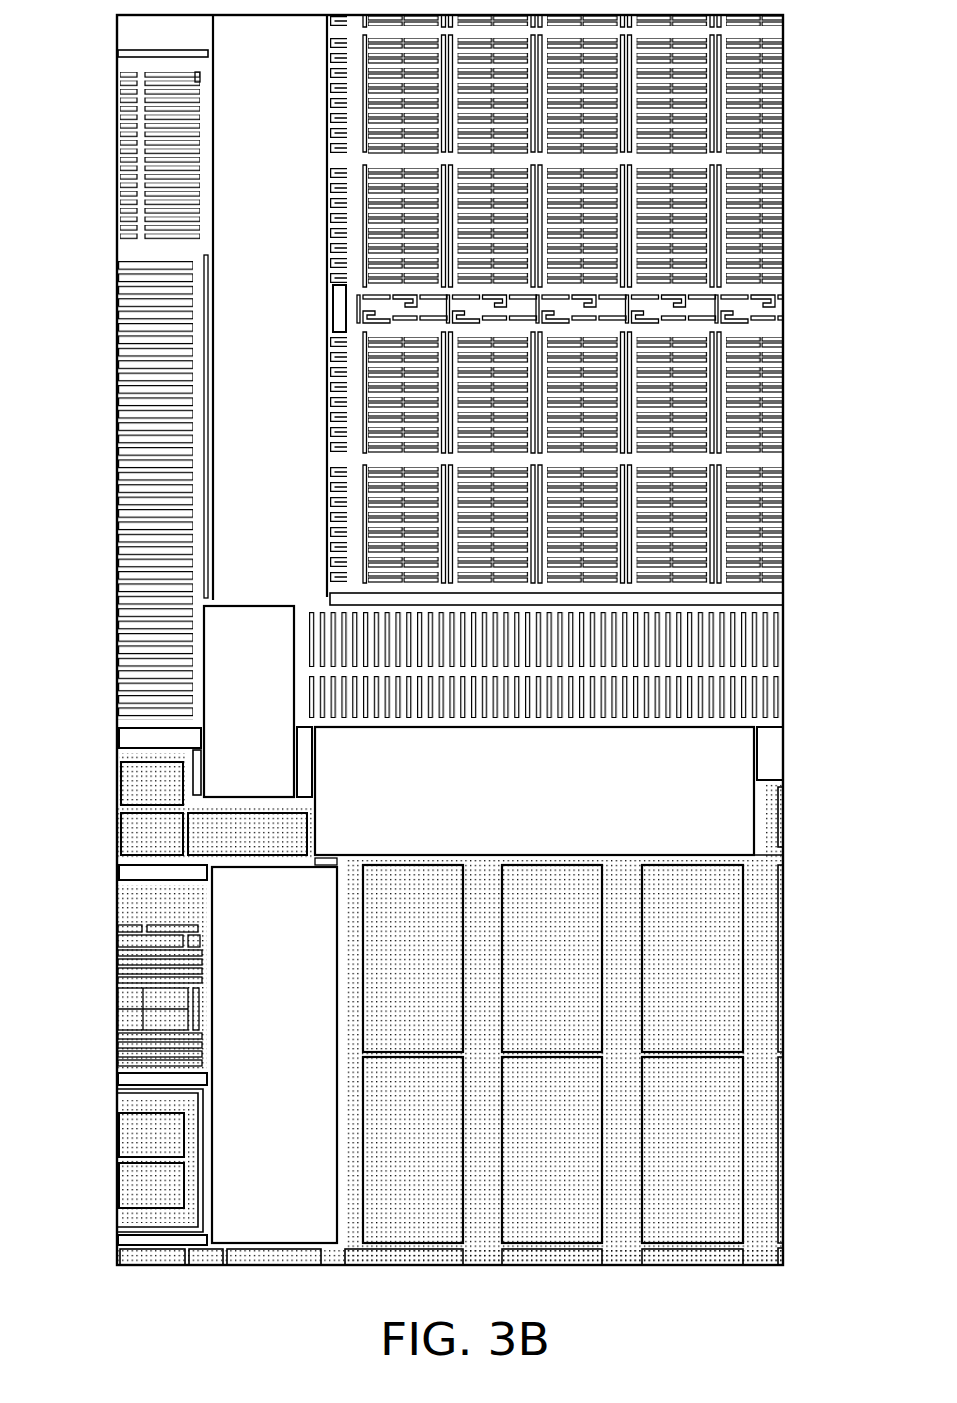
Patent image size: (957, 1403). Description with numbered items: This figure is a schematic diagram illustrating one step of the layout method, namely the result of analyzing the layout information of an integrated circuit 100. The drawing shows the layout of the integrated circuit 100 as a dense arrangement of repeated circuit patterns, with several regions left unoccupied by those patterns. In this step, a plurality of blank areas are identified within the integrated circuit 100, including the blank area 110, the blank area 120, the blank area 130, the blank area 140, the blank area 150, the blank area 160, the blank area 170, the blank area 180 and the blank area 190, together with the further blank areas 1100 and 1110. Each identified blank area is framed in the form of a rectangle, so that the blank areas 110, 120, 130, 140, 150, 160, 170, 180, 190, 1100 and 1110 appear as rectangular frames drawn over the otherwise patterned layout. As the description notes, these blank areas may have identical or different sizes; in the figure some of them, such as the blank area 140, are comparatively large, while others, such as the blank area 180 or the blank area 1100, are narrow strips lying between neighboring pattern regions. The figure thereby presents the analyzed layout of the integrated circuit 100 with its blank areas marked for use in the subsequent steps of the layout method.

The integrated circuit 100 is at (874, 1310).
The blank area 110 is at (217, 1131).
The blank area 120 is at (215, 620).
The blank area 130 is at (230, 153).
The blank area 140 is at (732, 813).
The blank area 150 is at (127, 1079).
The blank area 160 is at (127, 873).
The blank area 170 is at (127, 738).
The blank area 180 is at (307, 761).
The blank area 190 is at (337, 310).
The blank area 1100 is at (772, 752).
The blank area 1110 is at (197, 782).